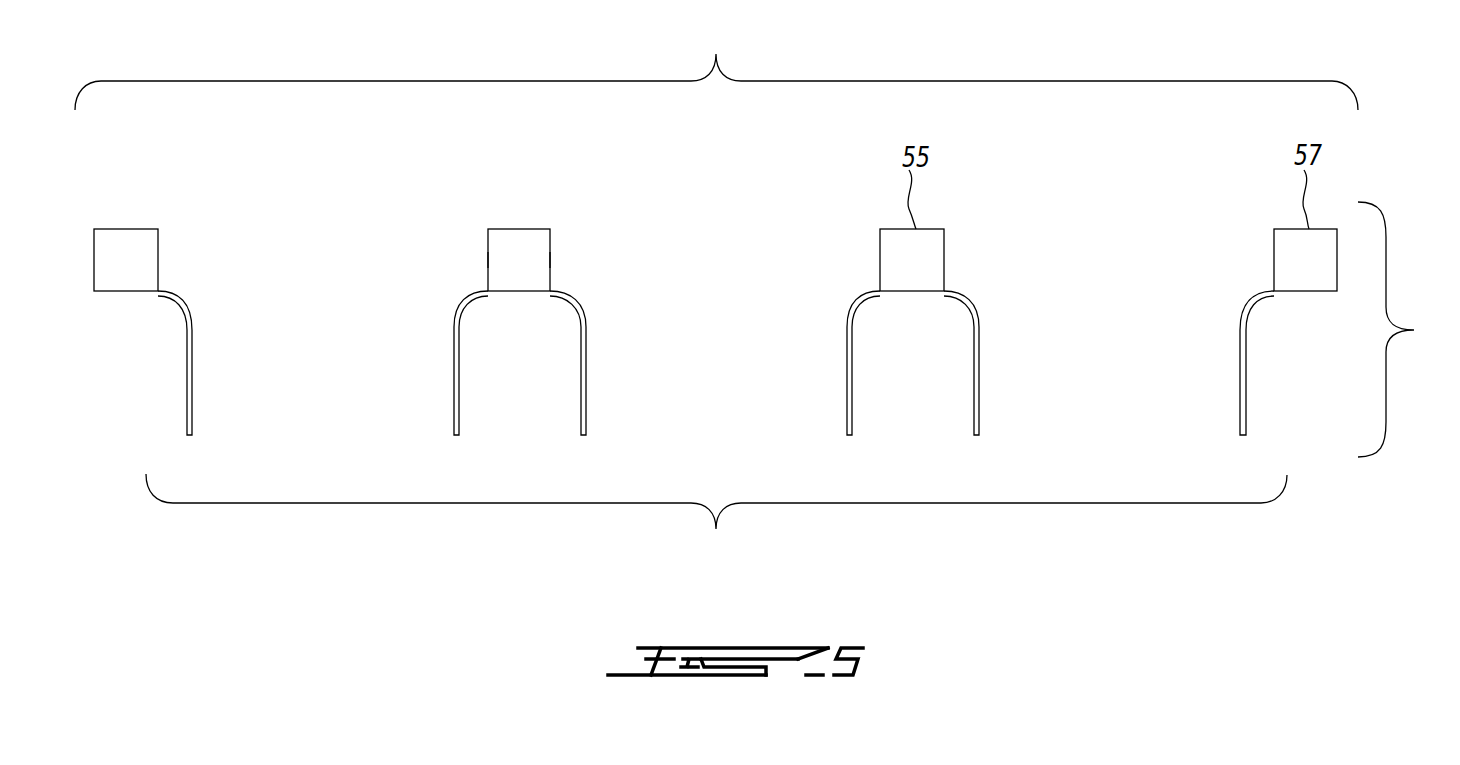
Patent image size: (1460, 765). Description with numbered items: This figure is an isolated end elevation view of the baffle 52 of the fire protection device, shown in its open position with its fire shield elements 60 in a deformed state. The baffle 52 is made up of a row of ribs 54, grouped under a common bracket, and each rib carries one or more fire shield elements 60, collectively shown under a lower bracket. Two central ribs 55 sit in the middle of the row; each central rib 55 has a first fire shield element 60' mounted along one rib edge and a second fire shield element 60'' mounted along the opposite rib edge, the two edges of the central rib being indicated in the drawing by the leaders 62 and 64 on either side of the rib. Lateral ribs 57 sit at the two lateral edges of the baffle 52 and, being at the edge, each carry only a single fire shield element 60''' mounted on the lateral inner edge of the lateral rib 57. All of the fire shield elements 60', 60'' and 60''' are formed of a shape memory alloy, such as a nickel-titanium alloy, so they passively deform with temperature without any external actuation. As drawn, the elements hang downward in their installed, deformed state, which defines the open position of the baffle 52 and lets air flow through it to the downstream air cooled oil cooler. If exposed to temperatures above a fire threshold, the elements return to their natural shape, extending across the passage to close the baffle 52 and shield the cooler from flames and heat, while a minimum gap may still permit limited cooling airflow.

The baffle 52 is at (1413, 328).
The ribs 54 is at (716, 65).
The central ribs 55 is at (522, 227).
The lateral ribs 57 is at (128, 227).
The fire shield elements 60 is at (716, 520).
The first fire shield element 60' is at (427, 363).
The second fire shield element 60'' is at (618, 363).
The single fire shield element of lateral rib 60''' is at (148, 363).
The first connection 62 is at (487, 258).
The second connection 64 is at (549, 258).